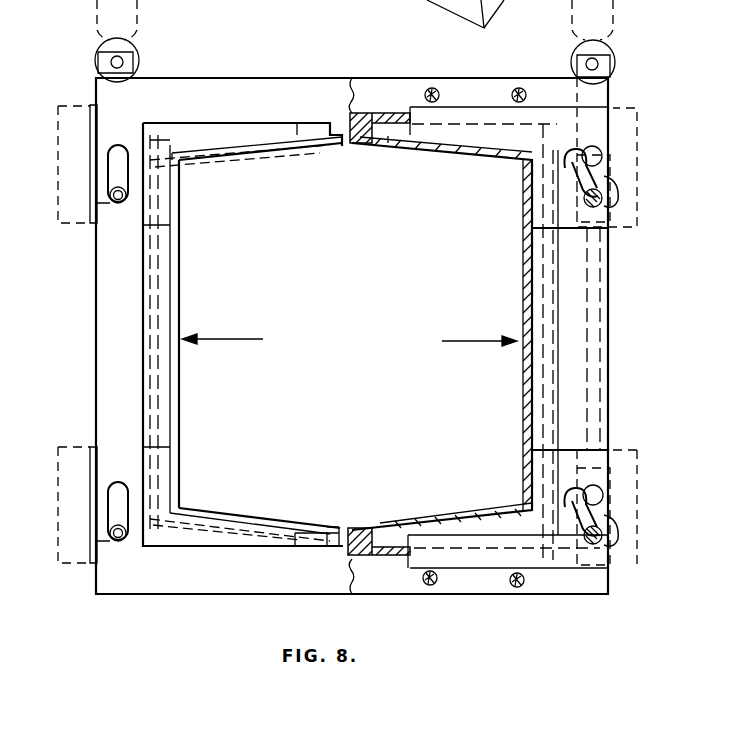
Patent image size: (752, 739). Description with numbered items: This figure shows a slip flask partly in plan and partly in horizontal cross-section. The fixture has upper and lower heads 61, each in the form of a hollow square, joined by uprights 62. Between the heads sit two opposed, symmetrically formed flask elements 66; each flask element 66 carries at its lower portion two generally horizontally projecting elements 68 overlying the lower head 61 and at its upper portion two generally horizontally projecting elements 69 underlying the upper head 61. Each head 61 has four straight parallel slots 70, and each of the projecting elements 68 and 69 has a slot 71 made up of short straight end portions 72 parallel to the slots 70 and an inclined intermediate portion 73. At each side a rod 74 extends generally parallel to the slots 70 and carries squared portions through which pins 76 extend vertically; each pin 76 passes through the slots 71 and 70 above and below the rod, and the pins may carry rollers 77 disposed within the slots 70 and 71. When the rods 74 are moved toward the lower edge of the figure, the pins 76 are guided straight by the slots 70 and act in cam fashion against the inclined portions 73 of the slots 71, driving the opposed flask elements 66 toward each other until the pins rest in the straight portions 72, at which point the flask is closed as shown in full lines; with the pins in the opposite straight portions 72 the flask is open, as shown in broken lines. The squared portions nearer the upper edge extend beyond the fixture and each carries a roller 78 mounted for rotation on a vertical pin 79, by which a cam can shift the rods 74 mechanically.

The head 61 is at (110, 257).
The upright 62 is at (519, 88).
The flask element 66 is at (290, 513).
The horizontally projecting element 68 is at (604, 147).
The horizontally projecting element 69 is at (90, 118).
The slot 70 is at (110, 148).
The slot 71 is at (562, 178).
The straight end portion 72 is at (565, 151).
The inclined intermediate portion 73 is at (576, 200).
The rod 74 is at (588, 339).
The pin 76 is at (607, 191).
The roller 77 is at (111, 203).
The roller 78 is at (136, 50).
The vertical pin 79 is at (124, 63).